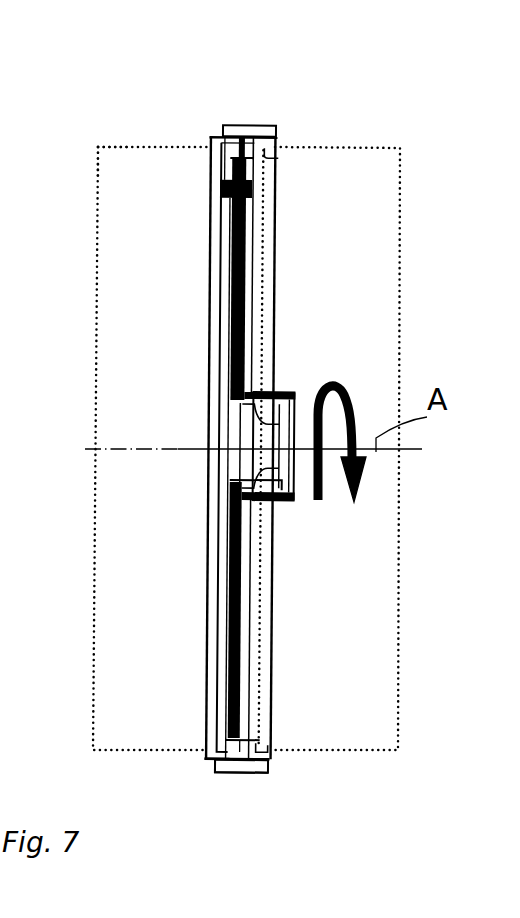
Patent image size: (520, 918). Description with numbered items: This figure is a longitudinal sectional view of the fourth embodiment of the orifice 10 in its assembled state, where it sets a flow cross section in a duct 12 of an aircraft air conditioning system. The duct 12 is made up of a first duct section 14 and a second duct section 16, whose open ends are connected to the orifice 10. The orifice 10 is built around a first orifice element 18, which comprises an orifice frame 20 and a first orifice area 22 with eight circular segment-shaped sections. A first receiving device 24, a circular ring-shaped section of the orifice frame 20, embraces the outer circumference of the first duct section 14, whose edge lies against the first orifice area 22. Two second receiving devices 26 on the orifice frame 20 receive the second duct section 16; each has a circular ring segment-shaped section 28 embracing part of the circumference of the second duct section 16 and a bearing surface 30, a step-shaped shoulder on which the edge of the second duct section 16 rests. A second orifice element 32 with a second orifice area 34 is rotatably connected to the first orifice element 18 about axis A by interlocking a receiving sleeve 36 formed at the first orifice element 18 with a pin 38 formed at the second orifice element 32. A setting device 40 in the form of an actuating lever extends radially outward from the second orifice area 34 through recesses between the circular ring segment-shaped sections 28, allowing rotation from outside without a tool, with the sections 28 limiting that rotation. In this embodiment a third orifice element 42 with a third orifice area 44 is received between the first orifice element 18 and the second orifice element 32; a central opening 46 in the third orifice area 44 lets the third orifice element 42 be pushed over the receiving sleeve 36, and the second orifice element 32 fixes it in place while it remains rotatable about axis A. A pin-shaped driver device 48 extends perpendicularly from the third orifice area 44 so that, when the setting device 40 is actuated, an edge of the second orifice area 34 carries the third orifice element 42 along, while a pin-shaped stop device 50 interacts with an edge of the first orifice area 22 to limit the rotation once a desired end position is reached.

The orifice 10 is at (475, 205).
The duct 12 is at (104, 130).
The first duct section 14 is at (162, 145).
The second duct section 16 is at (328, 148).
The first orifice element 18 is at (193, 775).
The orifice frame 20 is at (218, 775).
The first orifice area 22 is at (210, 338).
The first receiving device 24 is at (212, 137).
The second receiving device 26 is at (295, 185).
The circular ring segment-shaped section 28 is at (273, 125).
The bearing surface 30 is at (278, 158).
The second orifice element 32 is at (275, 620).
The second orifice area 34 is at (267, 297).
The receiving sleeve 36 is at (280, 395).
The pin 38 is at (240, 448).
The setting device 40 is at (240, 125).
The third orifice element 42 is at (262, 247).
The third orifice area 44 is at (228, 272).
The opening 46 is at (240, 480).
The driver device 48 is at (276, 223).
The stop device 50 is at (218, 183).